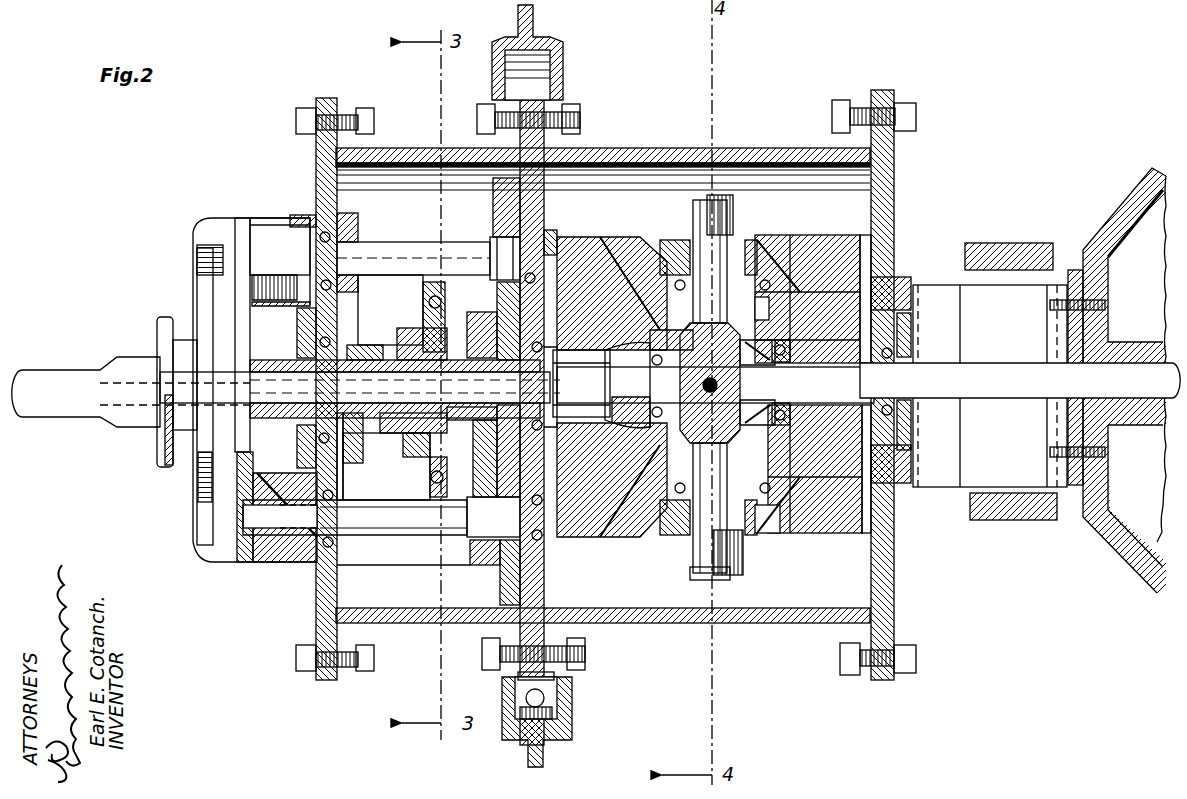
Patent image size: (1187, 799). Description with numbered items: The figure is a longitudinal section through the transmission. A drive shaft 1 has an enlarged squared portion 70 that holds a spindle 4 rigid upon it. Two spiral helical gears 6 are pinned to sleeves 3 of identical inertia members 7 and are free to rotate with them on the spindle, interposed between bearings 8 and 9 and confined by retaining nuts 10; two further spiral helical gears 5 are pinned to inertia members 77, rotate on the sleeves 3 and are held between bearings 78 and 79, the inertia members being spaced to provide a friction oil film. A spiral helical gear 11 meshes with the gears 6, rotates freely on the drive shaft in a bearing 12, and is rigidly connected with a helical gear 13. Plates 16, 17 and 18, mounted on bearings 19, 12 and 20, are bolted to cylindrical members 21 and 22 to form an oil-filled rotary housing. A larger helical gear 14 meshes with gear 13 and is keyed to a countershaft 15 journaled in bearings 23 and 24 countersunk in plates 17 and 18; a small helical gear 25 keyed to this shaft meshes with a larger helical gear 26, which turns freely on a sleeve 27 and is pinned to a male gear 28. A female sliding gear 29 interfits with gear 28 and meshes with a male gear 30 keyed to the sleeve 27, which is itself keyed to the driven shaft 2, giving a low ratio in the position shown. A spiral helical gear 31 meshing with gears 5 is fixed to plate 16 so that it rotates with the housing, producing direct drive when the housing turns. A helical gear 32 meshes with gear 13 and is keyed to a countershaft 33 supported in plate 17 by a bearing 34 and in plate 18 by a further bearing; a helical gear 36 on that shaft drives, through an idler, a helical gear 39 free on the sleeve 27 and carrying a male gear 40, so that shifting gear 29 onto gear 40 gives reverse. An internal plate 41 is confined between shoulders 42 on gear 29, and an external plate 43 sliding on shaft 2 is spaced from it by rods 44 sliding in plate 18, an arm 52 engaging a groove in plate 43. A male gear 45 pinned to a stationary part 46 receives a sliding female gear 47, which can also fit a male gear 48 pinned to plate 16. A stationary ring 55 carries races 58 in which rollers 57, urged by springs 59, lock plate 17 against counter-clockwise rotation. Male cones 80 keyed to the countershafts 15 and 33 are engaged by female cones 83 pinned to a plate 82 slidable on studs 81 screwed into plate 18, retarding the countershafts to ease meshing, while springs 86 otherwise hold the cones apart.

The drive shaft 1 is at (1030, 385).
The driven shaft 2 is at (120, 362).
The sleeves 3 is at (780, 272).
The spindle 4 is at (695, 560).
The spiral helical gears 5 is at (663, 265).
The spiral helical type gears 6 is at (800, 292).
The inertia members 7 is at (858, 240).
The bearing 8 is at (745, 350).
The bearing 9 is at (748, 248).
The retaining nuts 10 is at (748, 195).
The spiral helical type gear 11 is at (640, 275).
The bearing 12 is at (543, 262).
The helical gear 13 is at (445, 465).
The helical type gear 14 is at (510, 585).
The countershaft 15 is at (415, 527).
The plate 16 is at (895, 545).
The plate 17 is at (545, 580).
The plate 18 is at (798, 265).
The bearing 19 is at (912, 345).
The bearing 20 is at (365, 332).
The cylindrical member 21 is at (713, 205).
The cylindrical member 22 is at (398, 148).
The bearing 23 is at (542, 540).
The bearing 24 is at (345, 575).
The helical gear 25 is at (480, 558).
The helical gear 26 is at (480, 272).
The sleeve 27 is at (423, 300).
The male gear 28 is at (467, 330).
The female sliding gear 29 is at (397, 440).
The male gear 30 is at (365, 435).
The spiral helical gear 31 is at (890, 272).
The helical gear 32 is at (495, 212).
The countershaft 33 is at (410, 258).
The bearing 34 is at (552, 222).
The helical gear 36 is at (360, 225).
The helical gear 39 is at (346, 470).
The male gear 40 is at (400, 345).
The internal plate 41 is at (408, 522).
The shoulders 42 is at (412, 460).
The external plate 43 is at (198, 485).
The rods 44 is at (215, 385).
The male gear 45 is at (1068, 268).
The stationary part 46 is at (1108, 225).
The sliding female gear 47 is at (990, 255).
The male gear 48 is at (935, 282).
The arm 52 is at (170, 415).
The ring 55 is at (557, 45).
The rollers 57 is at (545, 680).
The races 58 is at (540, 712).
The springs 59 is at (552, 695).
The enlarged squared portion 70 is at (735, 385).
The inertia members 77 is at (596, 275).
The bearing 78 is at (805, 262).
The bearing 79 is at (767, 268).
The male cones 80 is at (313, 222).
The studs 81 is at (290, 275).
The plate 82 is at (240, 490).
The female cones 83 is at (262, 272).
The springs 86 is at (197, 258).